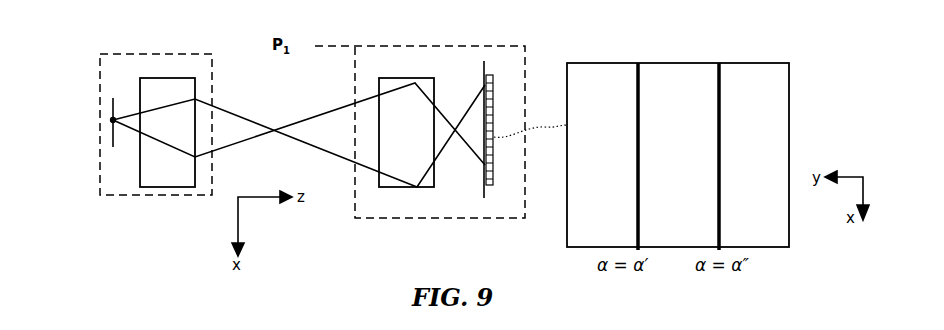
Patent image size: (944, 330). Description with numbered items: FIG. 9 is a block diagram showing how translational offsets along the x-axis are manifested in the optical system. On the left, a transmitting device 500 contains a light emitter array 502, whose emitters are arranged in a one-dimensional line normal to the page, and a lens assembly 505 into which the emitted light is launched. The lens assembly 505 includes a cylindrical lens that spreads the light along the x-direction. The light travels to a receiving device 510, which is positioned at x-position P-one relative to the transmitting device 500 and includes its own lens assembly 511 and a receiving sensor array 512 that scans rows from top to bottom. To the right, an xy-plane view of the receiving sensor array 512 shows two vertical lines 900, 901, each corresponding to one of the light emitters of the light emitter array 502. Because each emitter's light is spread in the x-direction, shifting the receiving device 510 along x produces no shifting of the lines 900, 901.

The transmitting device 500 is at (108, 195).
The light emitter array 502 is at (112, 104).
The lens assembly 505 is at (167, 187).
The receiving device 510 is at (527, 48).
The lens assembly 511 is at (418, 188).
The receiving sensor array 512 is at (486, 198).
The vertical line 900 is at (641, 121).
The vertical line 901 is at (718, 152).